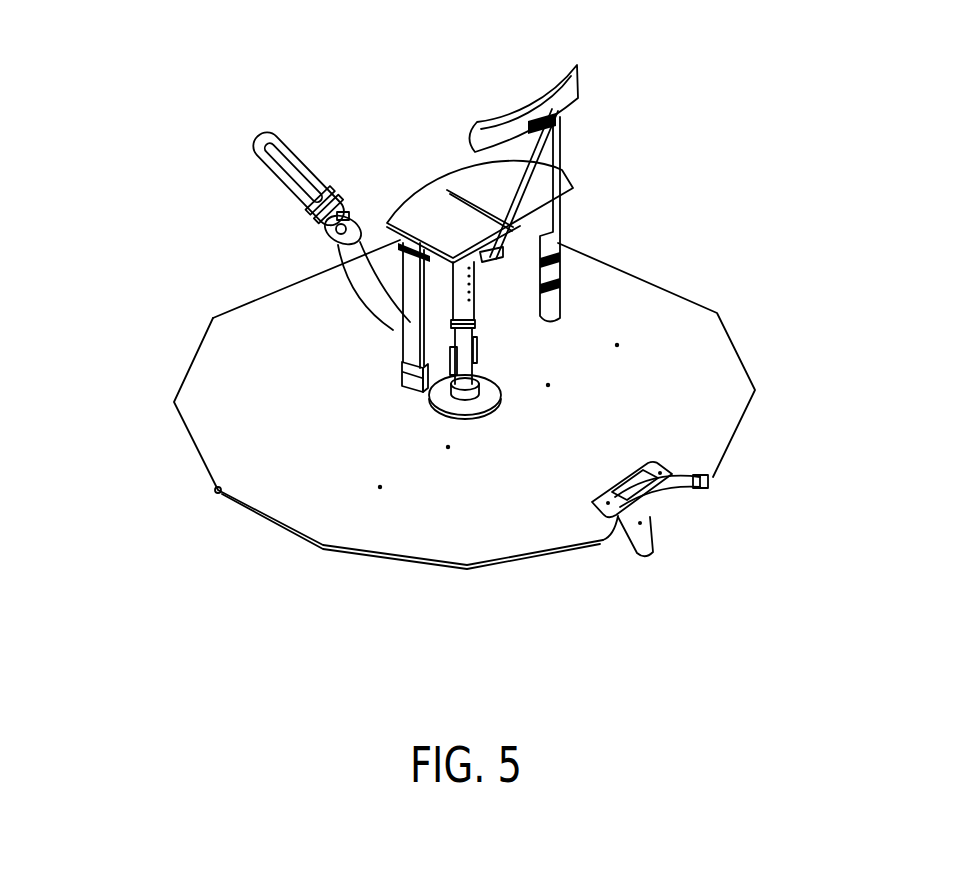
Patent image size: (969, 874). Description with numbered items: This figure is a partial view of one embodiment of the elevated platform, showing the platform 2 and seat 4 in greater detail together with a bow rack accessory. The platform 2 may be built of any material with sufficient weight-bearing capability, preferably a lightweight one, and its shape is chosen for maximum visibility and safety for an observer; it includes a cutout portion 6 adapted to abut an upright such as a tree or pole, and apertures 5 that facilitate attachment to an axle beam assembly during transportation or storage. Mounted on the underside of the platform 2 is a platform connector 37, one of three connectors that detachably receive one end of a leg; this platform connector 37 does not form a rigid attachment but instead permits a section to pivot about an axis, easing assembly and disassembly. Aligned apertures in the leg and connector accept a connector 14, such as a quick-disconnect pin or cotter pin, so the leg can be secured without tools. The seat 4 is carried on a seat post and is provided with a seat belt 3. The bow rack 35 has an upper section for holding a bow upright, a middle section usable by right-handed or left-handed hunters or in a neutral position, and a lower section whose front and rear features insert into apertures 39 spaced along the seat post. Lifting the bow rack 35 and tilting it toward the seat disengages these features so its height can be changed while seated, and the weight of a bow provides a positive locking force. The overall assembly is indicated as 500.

The platform 2 is at (345, 407).
The seat belt 3 is at (452, 363).
The seat 4 is at (450, 230).
The apertures 5 is at (617, 345).
The cutout portion 6 is at (643, 496).
The connector 14 is at (645, 504).
The bow rack 35 is at (367, 287).
The platform connector 37 is at (638, 553).
The apertures 39 is at (470, 292).
The rotating seat assembly 500 is at (303, 592).